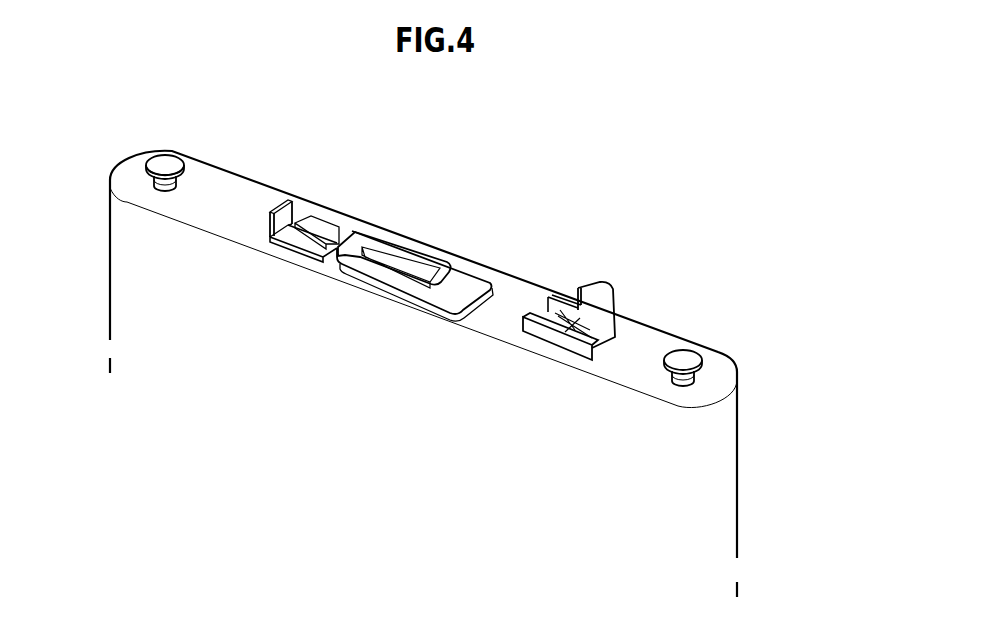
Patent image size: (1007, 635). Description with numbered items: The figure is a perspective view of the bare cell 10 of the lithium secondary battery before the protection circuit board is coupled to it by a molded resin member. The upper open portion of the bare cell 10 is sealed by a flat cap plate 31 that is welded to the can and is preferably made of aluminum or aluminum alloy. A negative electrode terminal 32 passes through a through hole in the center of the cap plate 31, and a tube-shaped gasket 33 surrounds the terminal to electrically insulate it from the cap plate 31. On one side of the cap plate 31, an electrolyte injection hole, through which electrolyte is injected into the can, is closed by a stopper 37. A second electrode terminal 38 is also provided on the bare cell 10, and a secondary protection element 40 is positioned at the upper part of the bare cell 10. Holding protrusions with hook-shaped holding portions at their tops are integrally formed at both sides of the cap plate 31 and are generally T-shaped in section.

The bare cell 10 is at (770, 414).
The cap plate 31 is at (262, 190).
The negative electrode terminal 32 is at (453, 273).
The gasket 33 is at (477, 280).
The stopper 37 is at (568, 308).
The electrode terminal 38 is at (593, 303).
The secondary protection element 40 is at (297, 247).